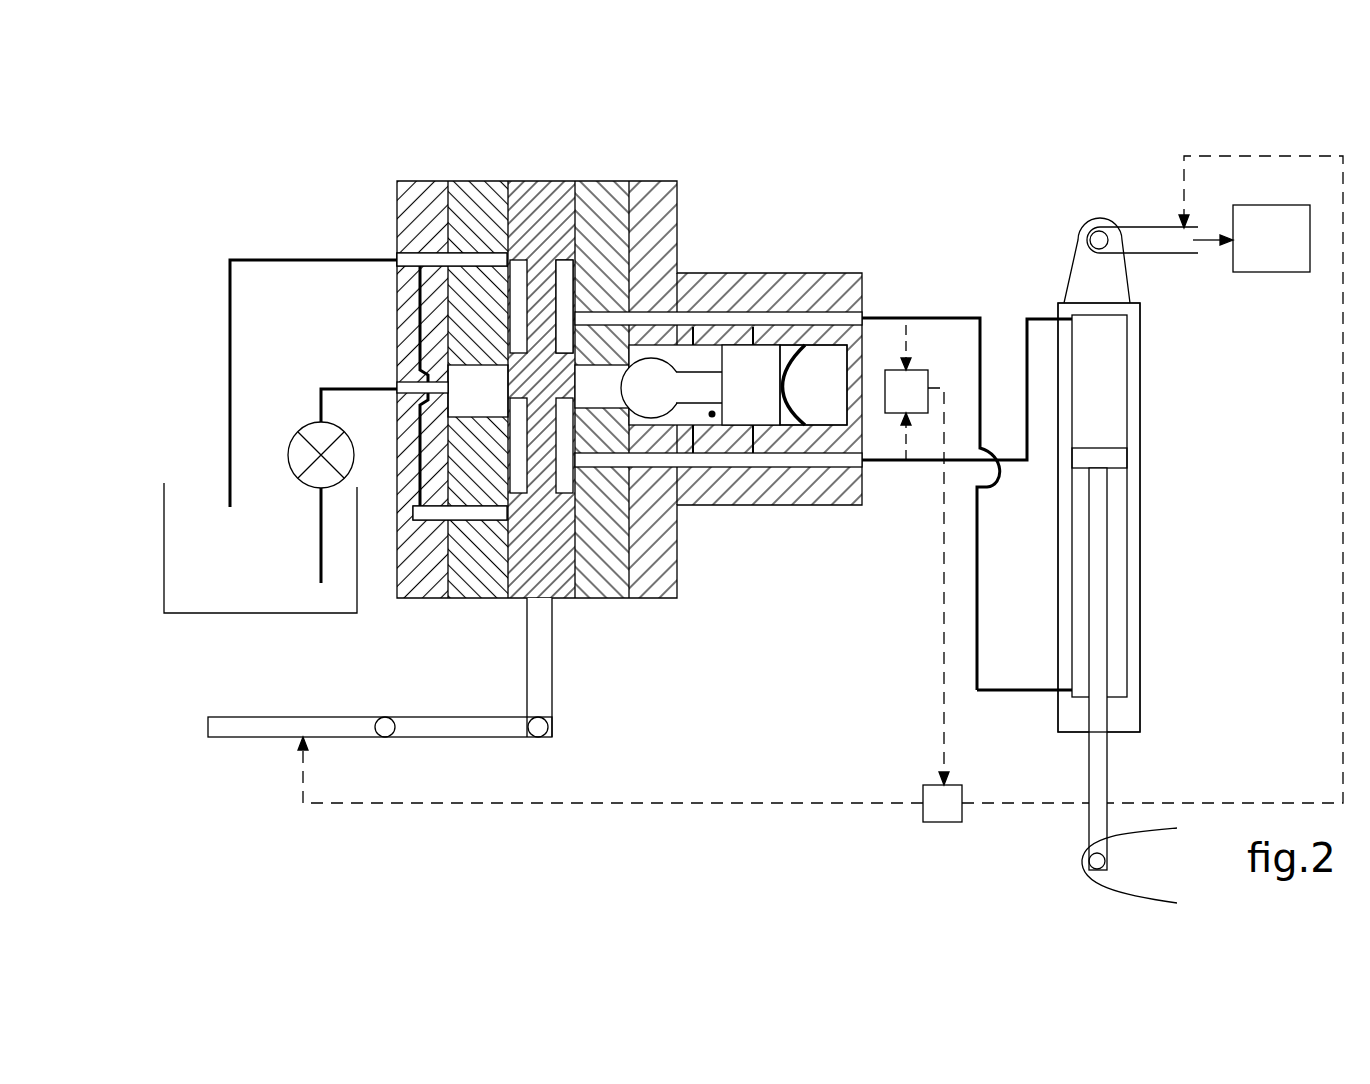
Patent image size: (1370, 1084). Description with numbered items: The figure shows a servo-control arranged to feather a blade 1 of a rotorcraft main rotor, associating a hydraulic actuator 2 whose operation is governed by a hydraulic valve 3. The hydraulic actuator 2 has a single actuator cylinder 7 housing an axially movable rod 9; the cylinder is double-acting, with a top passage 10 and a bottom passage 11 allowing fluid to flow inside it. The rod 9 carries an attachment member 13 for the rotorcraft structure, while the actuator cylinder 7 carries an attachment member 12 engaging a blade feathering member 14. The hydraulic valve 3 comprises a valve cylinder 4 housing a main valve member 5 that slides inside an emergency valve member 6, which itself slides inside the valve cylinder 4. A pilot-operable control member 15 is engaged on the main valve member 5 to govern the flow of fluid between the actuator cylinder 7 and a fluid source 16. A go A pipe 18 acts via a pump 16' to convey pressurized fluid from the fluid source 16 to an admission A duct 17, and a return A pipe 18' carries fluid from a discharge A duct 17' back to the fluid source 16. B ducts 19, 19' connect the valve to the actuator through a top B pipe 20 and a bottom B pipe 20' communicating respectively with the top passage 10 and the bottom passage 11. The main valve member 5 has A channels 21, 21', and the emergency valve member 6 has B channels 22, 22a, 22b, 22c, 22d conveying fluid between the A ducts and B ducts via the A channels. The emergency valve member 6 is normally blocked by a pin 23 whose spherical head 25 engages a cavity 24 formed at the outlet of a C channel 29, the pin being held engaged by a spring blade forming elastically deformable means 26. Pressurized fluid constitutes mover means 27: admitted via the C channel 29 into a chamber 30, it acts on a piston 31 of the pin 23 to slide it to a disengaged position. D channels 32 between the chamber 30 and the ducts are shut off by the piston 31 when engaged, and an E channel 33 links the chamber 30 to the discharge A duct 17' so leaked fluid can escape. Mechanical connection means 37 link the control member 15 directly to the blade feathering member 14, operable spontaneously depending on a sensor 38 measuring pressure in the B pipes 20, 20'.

The blades 1 is at (1263, 249).
The hydraulic actuator 2 is at (1173, 483).
The hydraulic valve 3 is at (360, 208).
The valve cylinder 4 is at (405, 181).
The main valve member 5 is at (596, 181).
The emergency valve member 6 is at (651, 181).
The actuator cylinder 7 is at (1141, 548).
The rod 9 is at (1108, 768).
The top passage 10 is at (1072, 318).
The bottom passage 11 is at (1072, 690).
The attachment member 12 is at (1130, 272).
The attachment member 13 is at (1160, 874).
The blade feathering member 14 is at (1168, 227).
The control member 15 is at (341, 717).
The fluid source 16 is at (260, 548).
The pump 16' is at (307, 432).
The admission A duct 17 is at (405, 386).
The discharge A duct 17' is at (427, 419).
The go A pipe 18 is at (351, 456).
The return A pipe 18' is at (313, 354).
The B duct 19 is at (769, 471).
The B duct 19' is at (769, 309).
The top B pipe 20 is at (967, 426).
The bottom B pipe 20' is at (931, 472).
The A channel 21 is at (536, 251).
The A channel 21' is at (554, 567).
The B channel 22 is at (478, 389).
The B channel 22a is at (462, 253).
The B channel 22b is at (486, 522).
The B channel 22c is at (598, 300).
The B channel 22d is at (684, 507).
The pin 23 is at (700, 407).
The cavity 24 is at (688, 312).
The head 25 is at (665, 401).
The elastically deformable means 26 is at (793, 403).
The mover means 27 is at (614, 399).
The C channel 29 is at (632, 472).
The chamber 30 is at (712, 414).
The piston 31 is at (764, 399).
The D channels 32 is at (765, 330).
The E channel 33 is at (727, 332).
The mechanical connection means 37 is at (955, 817).
The sensor 38 is at (919, 404).